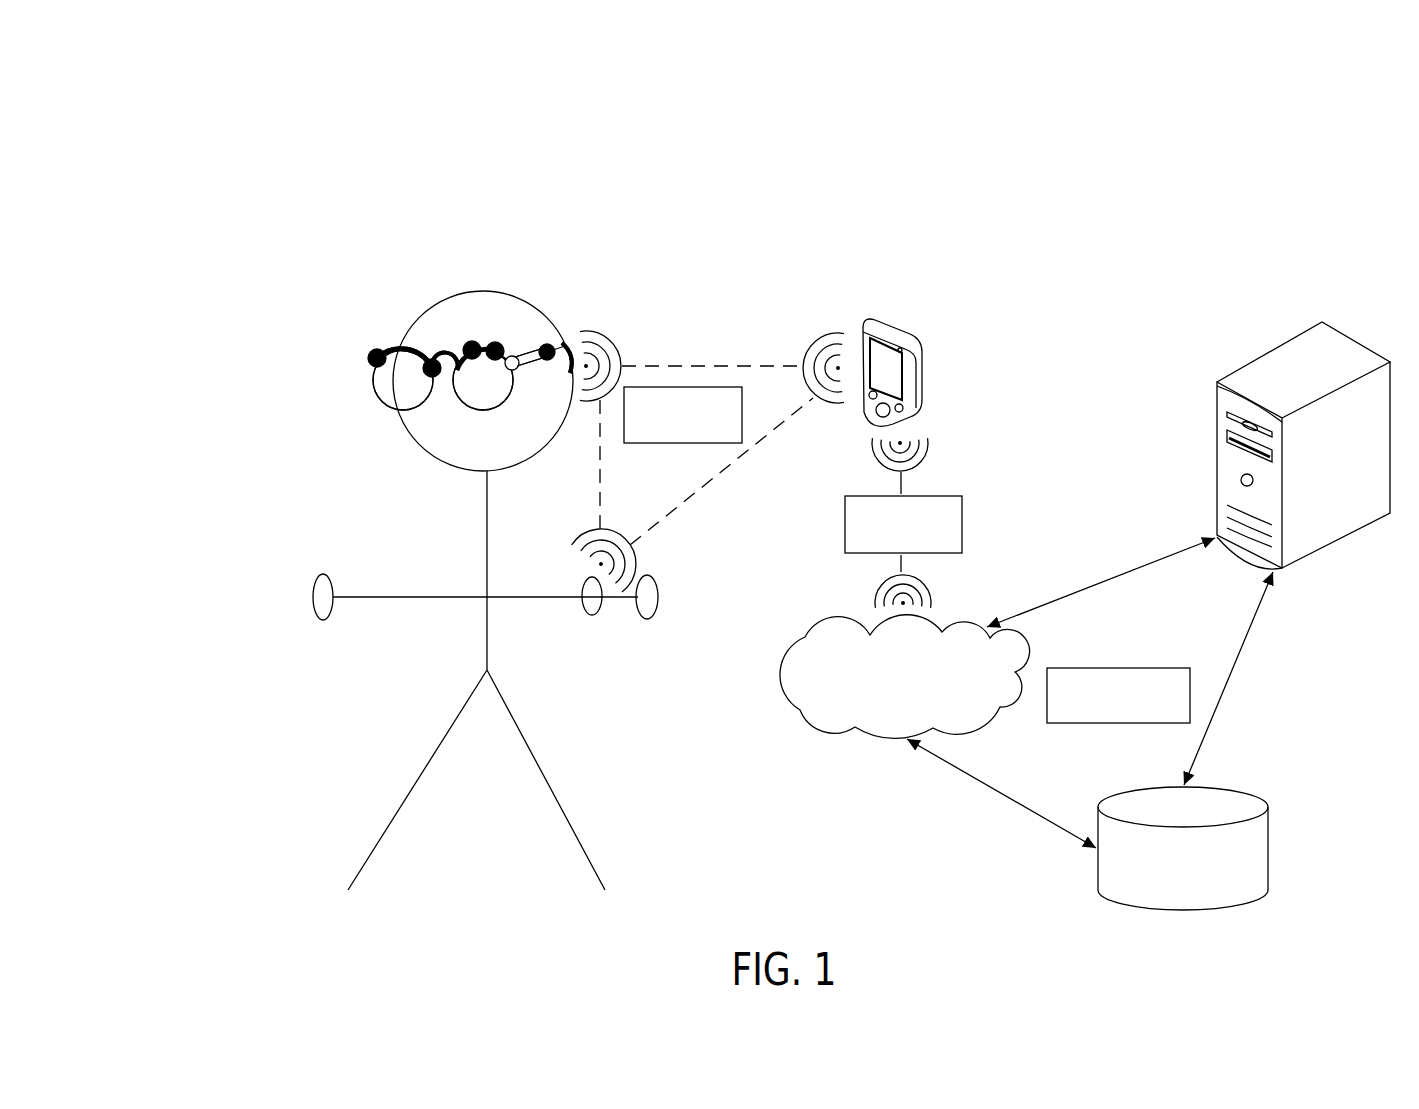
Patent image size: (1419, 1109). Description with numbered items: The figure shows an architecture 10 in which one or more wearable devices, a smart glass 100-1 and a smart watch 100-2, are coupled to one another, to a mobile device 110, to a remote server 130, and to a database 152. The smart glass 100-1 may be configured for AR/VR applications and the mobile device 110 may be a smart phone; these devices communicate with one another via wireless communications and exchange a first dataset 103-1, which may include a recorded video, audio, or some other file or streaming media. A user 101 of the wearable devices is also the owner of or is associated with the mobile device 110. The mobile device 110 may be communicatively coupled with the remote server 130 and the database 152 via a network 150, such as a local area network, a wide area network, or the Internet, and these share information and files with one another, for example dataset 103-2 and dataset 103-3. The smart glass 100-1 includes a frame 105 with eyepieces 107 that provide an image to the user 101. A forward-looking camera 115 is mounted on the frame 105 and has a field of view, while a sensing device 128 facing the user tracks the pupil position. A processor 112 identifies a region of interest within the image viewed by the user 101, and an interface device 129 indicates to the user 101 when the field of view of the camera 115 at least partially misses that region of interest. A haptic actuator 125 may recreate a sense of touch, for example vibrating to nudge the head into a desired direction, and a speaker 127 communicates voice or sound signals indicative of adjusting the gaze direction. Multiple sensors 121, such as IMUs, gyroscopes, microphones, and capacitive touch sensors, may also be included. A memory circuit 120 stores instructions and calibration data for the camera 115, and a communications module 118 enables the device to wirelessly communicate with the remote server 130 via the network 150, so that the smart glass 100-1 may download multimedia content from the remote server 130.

The architecture 10 is at (337, 143).
The user 101 is at (392, 822).
The smart glass 100-1 is at (478, 386).
The smart watch 100-2 is at (587, 616).
The frame 105 is at (430, 362).
The eyepieces 107 is at (453, 390).
The processor 112 is at (530, 347).
The camera 115 is at (375, 358).
The communications module 118 is at (513, 356).
The memory circuit 120 is at (563, 344).
The sensors 121 is at (420, 350).
The haptic actuator 125 is at (446, 352).
The speaker 127 is at (550, 343).
The sensing device 128 is at (495, 343).
The interface device 129 is at (472, 342).
The mobile device 110 is at (921, 348).
The first dataset 103-1 is at (639, 433).
The dataset 103-2 is at (862, 543).
The dataset 103-3 is at (1077, 713).
The remote server 130 is at (1311, 473).
The network 150 is at (877, 715).
The database 152 is at (1157, 893).